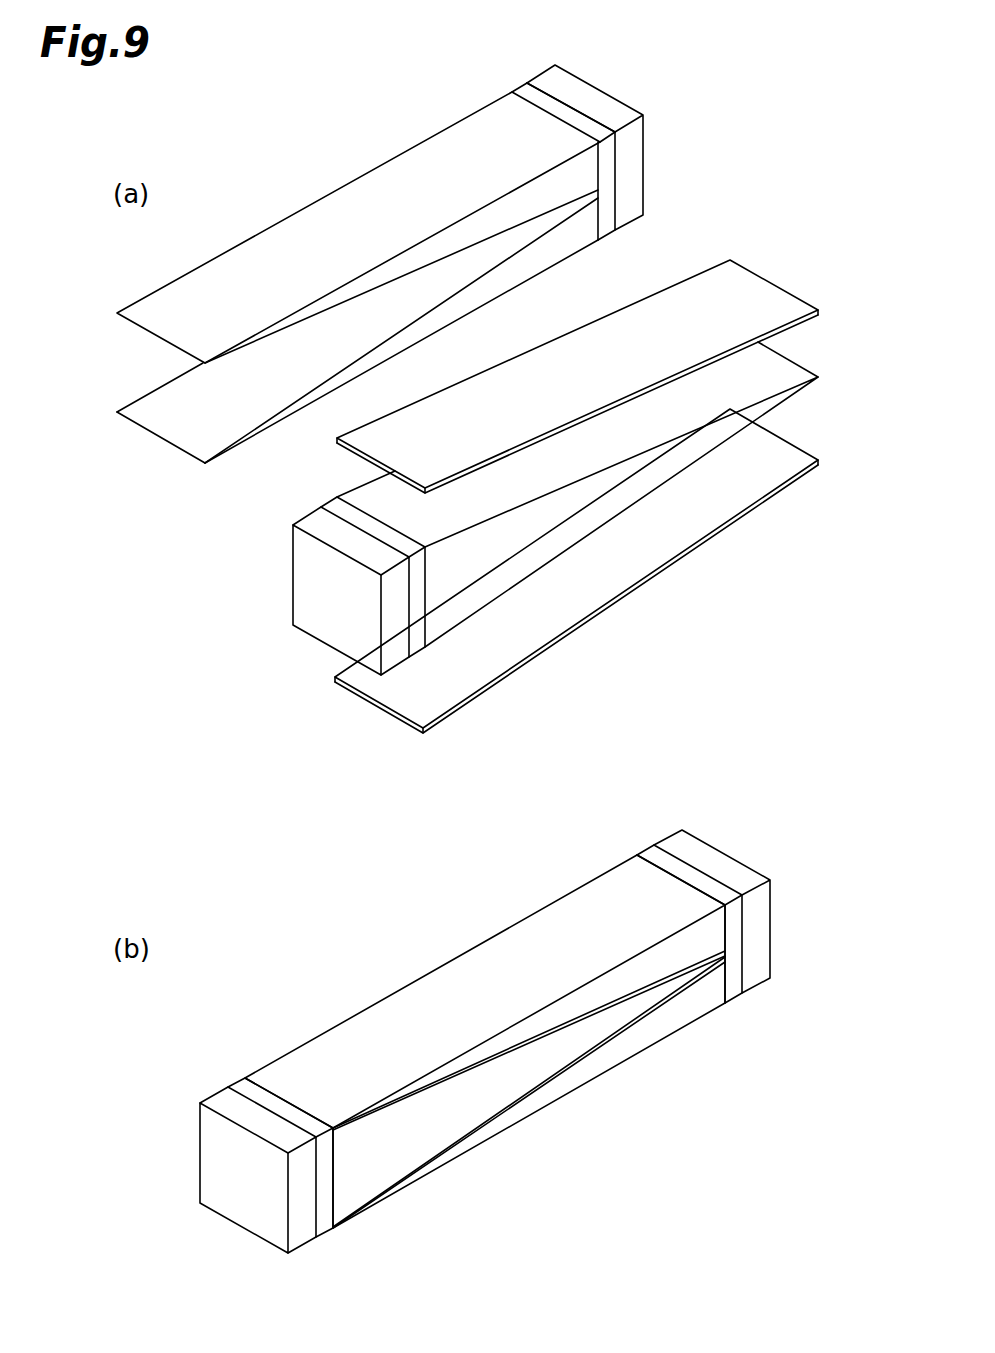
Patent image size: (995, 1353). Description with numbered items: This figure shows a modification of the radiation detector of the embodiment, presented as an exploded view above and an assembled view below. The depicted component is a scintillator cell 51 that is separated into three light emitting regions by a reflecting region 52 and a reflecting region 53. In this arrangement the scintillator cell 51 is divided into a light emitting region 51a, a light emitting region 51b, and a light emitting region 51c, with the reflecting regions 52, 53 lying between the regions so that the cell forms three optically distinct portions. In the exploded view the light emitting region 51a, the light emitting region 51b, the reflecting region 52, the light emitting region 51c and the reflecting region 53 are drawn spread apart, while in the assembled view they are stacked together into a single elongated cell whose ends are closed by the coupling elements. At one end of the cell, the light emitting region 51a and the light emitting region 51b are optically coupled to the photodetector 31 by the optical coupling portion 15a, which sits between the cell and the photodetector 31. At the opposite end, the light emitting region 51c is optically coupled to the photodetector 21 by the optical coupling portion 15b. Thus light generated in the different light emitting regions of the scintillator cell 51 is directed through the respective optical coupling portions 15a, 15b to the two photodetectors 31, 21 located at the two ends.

The scintillator cell 51 is at (540, 826).
The light emitting region 51a is at (348, 198).
The light emitting region 51b is at (432, 333).
The light emitting region 51c is at (487, 585).
The reflecting region 52 is at (750, 300).
The reflecting region 53 is at (700, 548).
The photodetector 21 is at (312, 640).
The photodetector 31 is at (630, 160).
The optical coupling portion 15a is at (610, 232).
The optical coupling portion 15b is at (417, 655).